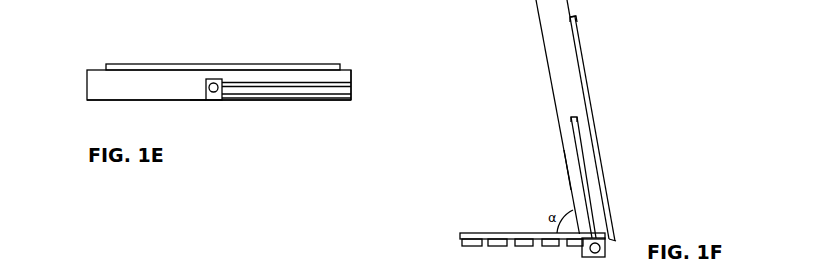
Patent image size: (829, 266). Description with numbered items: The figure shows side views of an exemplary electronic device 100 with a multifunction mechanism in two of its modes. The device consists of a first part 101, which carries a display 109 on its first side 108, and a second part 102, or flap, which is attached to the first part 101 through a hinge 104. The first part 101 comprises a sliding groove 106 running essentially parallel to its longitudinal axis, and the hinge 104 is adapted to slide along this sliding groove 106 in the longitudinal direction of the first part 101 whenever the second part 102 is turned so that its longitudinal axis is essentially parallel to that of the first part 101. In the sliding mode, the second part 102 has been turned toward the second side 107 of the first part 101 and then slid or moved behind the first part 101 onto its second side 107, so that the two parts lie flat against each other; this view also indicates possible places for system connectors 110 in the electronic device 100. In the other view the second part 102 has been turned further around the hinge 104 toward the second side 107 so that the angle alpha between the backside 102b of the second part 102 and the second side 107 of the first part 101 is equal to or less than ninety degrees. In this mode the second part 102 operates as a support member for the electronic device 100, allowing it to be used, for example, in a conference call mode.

In FIG. 1E, the electronic device 100 is at (192, 46).
In FIG. 1F, the electronic device 100 is at (514, 60).
In FIG. 1E, the first part 101 is at (198, 74).
In FIG. 1F, the first part 101 is at (554, 119).
In FIG. 1E, the second part 102 is at (373, 105).
In FIG. 1F, the second part 102 is at (513, 225).
In FIG. 1F, the backside of the second part 102b is at (502, 222).
In FIG. 1E, the hinge 104 is at (231, 111).
In FIG. 1F, the hinge 104 is at (614, 229).
In FIG. 1E, the sliding groove 106 is at (286, 110).
In FIG. 1F, the sliding groove 106 is at (550, 159).
In FIG. 1E, the second side 107 is at (196, 112).
In FIG. 1F, the second side 107 is at (548, 164).
In FIG. 1E, the first side 108 is at (97, 59).
In FIG. 1F, the first side 108 is at (583, 14).
In FIG. 1E, the display 109 is at (248, 49).
In FIG. 1F, the display 109 is at (606, 128).
In FIG. 1E, the system connectors 110 is at (211, 108).